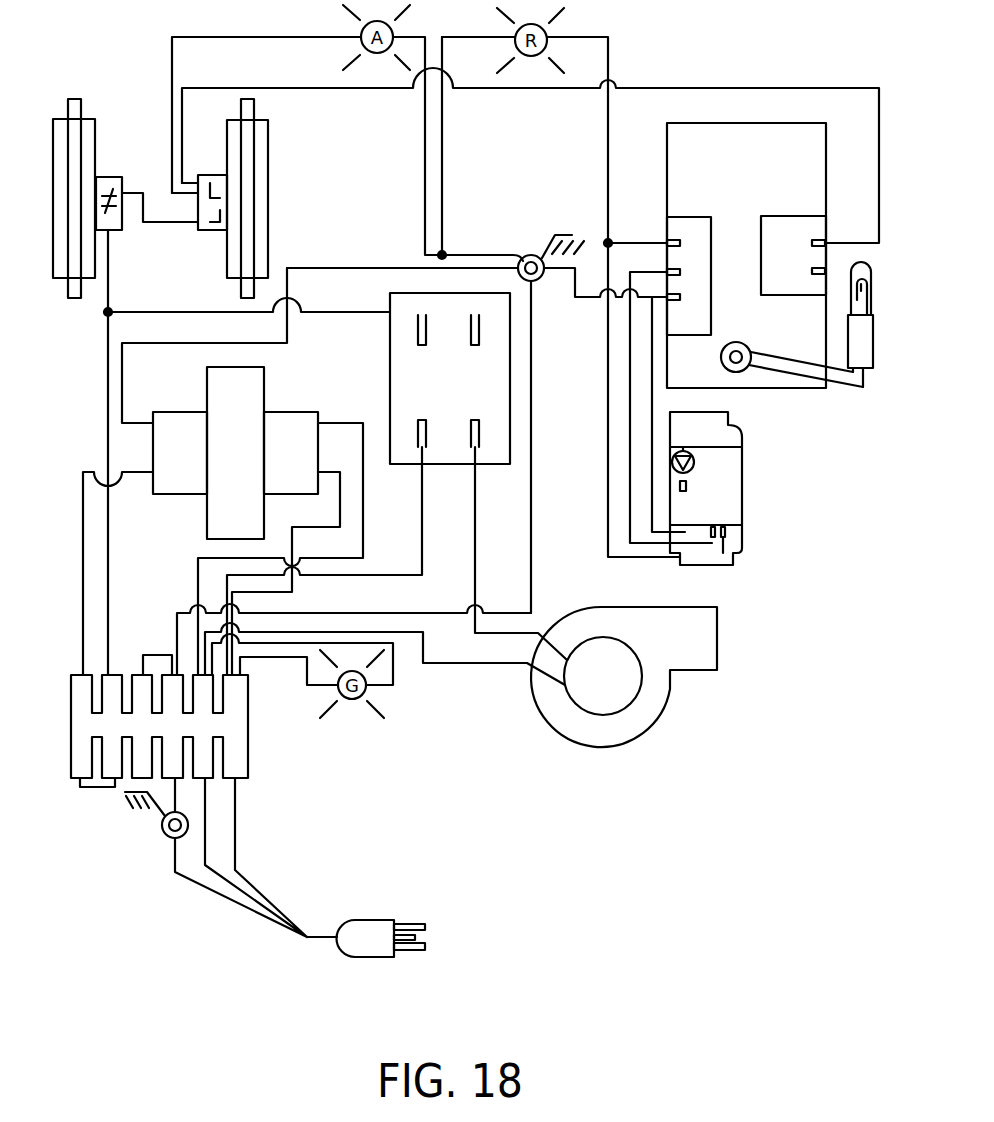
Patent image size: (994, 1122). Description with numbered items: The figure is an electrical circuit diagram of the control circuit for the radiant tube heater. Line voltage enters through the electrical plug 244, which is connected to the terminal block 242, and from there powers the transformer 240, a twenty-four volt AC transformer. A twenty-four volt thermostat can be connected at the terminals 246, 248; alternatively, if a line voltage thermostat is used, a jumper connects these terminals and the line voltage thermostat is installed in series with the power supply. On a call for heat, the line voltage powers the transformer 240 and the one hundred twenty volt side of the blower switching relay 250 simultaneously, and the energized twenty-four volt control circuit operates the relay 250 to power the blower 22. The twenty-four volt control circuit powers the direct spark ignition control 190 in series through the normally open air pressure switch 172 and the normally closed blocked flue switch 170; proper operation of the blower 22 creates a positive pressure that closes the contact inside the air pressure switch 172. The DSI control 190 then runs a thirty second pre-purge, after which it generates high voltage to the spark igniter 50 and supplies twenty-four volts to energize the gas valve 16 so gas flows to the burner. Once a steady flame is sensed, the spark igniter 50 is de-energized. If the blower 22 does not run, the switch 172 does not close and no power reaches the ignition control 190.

The blocked flue switch 170 is at (90, 138).
The air pressure switch 172 is at (260, 183).
The transformer 240 is at (252, 392).
The blower switching relay 250 is at (475, 394).
The direct spark ignition control 190 is at (755, 375).
The spark igniter 50 is at (863, 343).
The main gas valve 16 is at (727, 470).
The blower 22 is at (625, 622).
The terminal block 242 is at (233, 718).
The thermostat terminal 246 is at (80, 767).
The thermostat terminal 248 is at (118, 767).
The electrical plug 244 is at (358, 932).